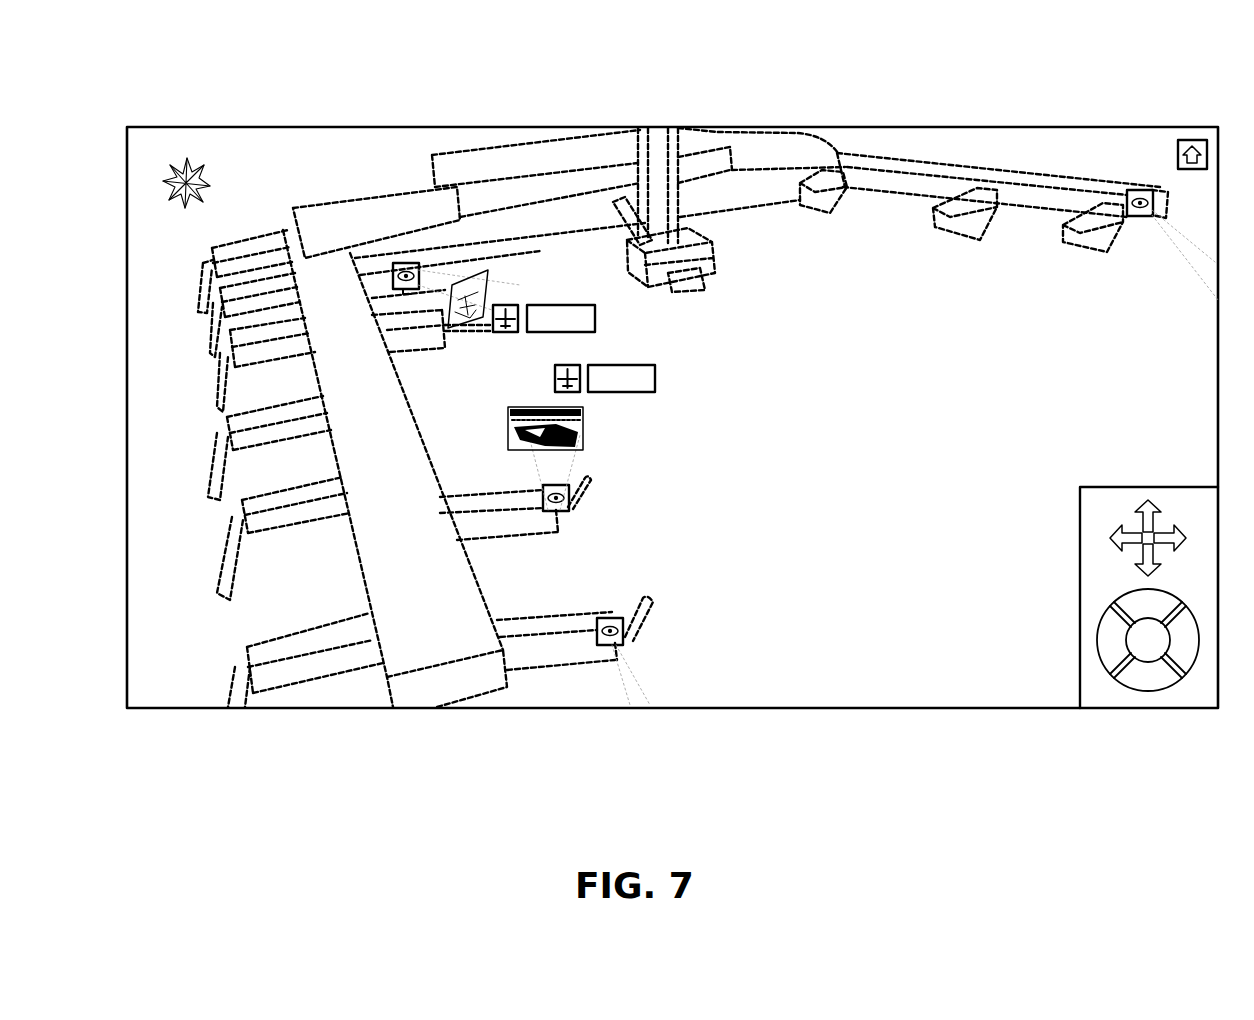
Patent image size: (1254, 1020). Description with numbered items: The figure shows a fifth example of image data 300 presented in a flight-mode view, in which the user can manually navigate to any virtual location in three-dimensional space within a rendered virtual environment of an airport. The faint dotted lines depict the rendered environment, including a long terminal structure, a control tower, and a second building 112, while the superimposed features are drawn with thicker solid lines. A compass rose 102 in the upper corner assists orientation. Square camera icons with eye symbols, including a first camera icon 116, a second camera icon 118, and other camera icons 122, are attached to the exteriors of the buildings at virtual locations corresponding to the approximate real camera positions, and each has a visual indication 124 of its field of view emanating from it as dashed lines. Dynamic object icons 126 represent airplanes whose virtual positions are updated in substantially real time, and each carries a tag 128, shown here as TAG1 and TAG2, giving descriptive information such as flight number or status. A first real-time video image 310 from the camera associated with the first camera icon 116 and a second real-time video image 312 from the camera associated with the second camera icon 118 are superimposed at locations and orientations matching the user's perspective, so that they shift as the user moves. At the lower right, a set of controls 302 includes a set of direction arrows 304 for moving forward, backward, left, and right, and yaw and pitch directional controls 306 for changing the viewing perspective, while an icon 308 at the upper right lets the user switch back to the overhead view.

The image data 300 is at (218, 58).
The compass rose 102 is at (256, 174).
The second building 112 is at (1060, 176).
The first camera icon 116 is at (570, 508).
The second camera icon 118 is at (420, 262).
The other camera icons 122 is at (626, 641).
The visual indication of field of view 124 is at (460, 357).
The dynamic object icons 126 is at (505, 334).
The tag 128 is at (596, 323).
The set of controls 302 is at (1119, 487).
The set of direction arrows 304 is at (1106, 507).
The yaw and pitch directional controls 306 is at (1098, 587).
The icon 308 is at (1182, 139).
The first real-time video image 310 is at (585, 438).
The second real-time video image 312 is at (488, 286).